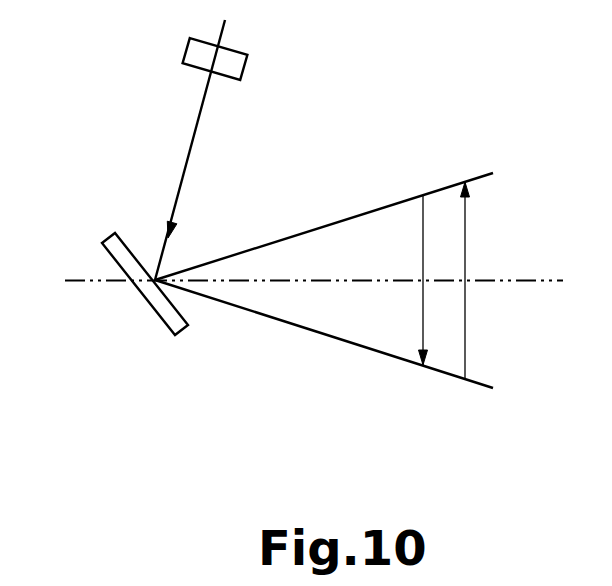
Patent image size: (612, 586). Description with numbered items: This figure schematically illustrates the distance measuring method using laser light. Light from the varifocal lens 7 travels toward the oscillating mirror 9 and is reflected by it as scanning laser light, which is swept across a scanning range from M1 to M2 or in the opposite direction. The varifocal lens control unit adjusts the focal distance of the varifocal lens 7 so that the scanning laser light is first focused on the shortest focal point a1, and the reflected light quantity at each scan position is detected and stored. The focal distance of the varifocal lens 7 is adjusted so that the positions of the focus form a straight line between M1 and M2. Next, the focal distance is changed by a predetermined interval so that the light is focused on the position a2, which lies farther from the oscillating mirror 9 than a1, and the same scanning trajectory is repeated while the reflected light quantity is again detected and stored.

The varifocal lens 7 is at (247, 67).
The oscillating mirror 9 is at (170, 328).
The scanning start side position M1 is at (324, 219).
The scanning end side position M2 is at (324, 342).
The shortest focal point a1 is at (422, 279).
The focal position a2 is at (471, 279).